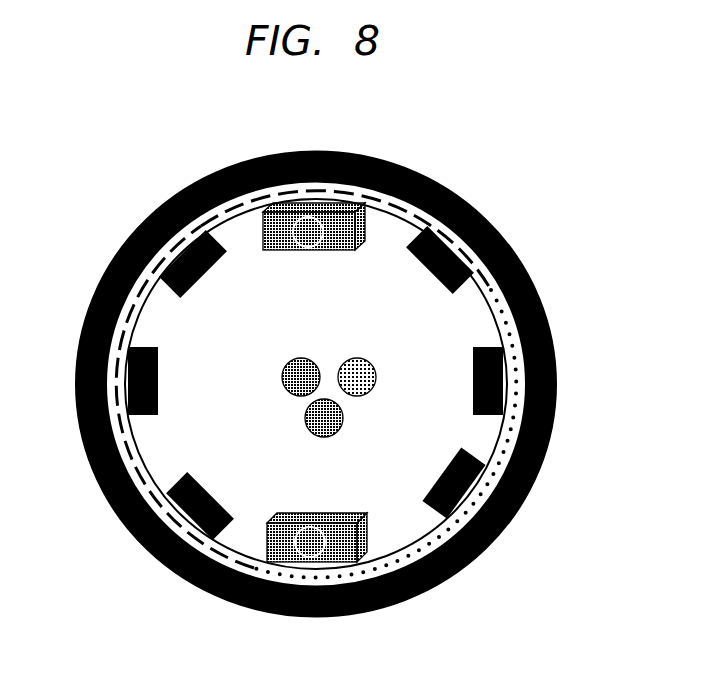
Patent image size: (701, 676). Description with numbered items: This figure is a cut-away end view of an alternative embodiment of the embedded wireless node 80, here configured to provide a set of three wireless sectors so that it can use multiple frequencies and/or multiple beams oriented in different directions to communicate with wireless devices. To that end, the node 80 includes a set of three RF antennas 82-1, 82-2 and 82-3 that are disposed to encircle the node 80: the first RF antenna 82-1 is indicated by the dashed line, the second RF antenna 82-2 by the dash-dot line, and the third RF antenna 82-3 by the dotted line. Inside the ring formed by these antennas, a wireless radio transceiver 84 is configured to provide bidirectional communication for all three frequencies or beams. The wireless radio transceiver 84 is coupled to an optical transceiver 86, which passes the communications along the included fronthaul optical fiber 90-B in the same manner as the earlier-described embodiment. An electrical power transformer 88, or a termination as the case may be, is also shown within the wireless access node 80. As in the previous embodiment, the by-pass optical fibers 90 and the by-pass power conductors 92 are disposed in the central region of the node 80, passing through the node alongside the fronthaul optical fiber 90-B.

The embedded wireless node 80 is at (124, 178).
The first RF antenna 82-1 is at (127, 447).
The second RF antenna 82-2 is at (392, 198).
The third RF antenna 82-3 is at (467, 512).
The wireless radio transceiver 84 is at (233, 552).
The optical transceiver 86 is at (334, 248).
The electrical power transformer 88 is at (328, 514).
The by-pass optical fibers 90 is at (290, 373).
The by-pass power conductors 92 is at (365, 370).
The fronthaul optical fiber 90-B is at (316, 430).